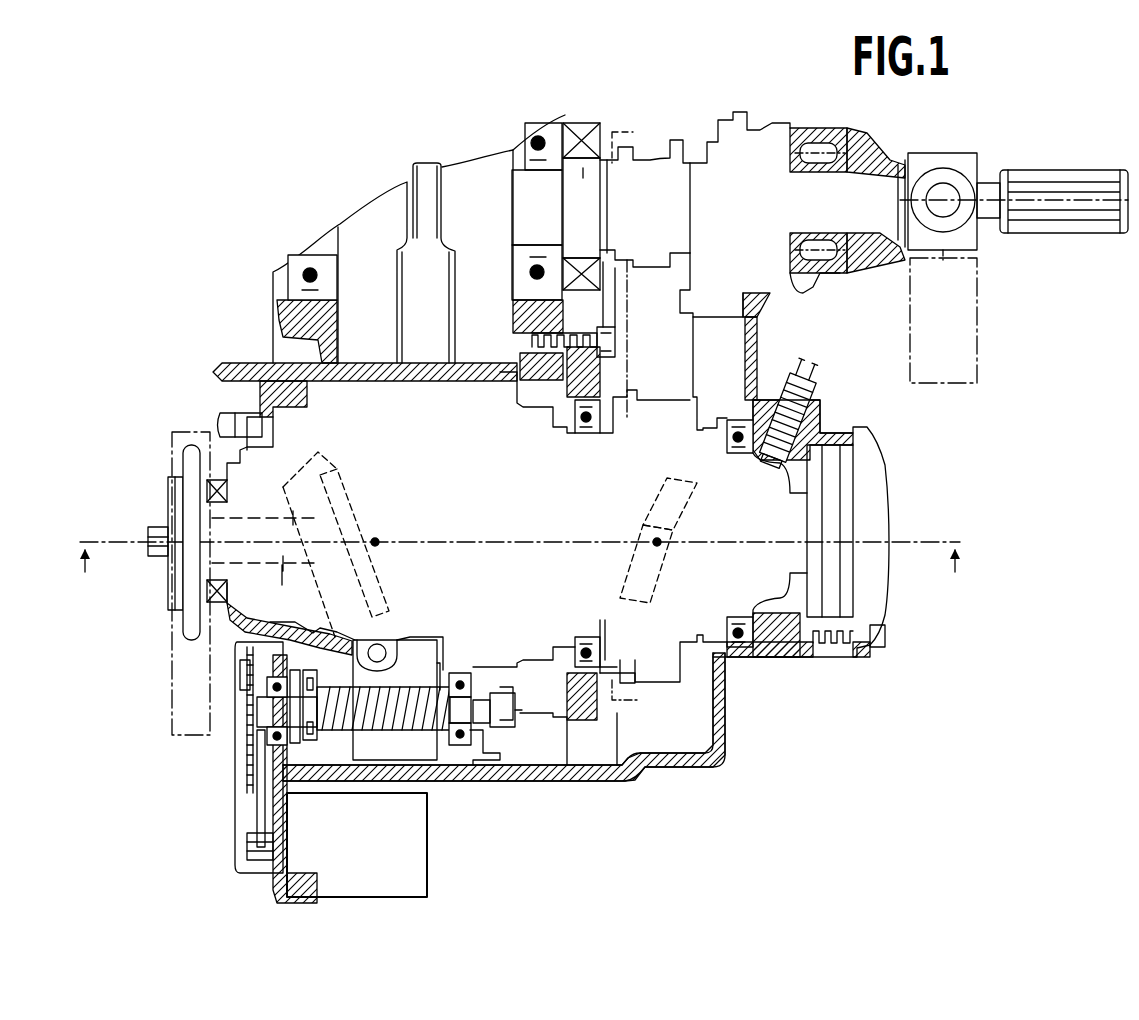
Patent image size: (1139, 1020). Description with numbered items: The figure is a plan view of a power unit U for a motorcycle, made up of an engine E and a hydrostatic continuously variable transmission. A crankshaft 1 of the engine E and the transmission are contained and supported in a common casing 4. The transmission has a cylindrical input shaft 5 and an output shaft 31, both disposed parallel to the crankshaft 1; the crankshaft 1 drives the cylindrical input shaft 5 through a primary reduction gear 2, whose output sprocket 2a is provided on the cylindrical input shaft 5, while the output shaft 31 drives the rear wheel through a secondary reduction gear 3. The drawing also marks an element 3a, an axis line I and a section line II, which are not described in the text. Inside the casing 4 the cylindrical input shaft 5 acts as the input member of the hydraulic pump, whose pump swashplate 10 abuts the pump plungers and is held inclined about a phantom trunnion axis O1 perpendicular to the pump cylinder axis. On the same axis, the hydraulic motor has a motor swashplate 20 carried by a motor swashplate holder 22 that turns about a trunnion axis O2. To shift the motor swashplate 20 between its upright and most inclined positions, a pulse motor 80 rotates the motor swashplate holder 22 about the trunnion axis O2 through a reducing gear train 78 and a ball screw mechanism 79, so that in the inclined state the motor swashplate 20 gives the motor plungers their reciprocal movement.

The crankshaft 1 is at (585, 175).
The primary reduction gear 2 is at (638, 132).
The output sprocket 2a is at (627, 382).
The secondary reduction gear 3 is at (160, 480).
The pulley rim 3a is at (189, 447).
The common casing 4 is at (668, 767).
The cylindrical input shaft 5 is at (664, 412).
The pump swashplate 10 is at (646, 586).
The motor swashplate 20 is at (380, 589).
The motor swashplate holder 22 is at (383, 637).
The output shaft 31 is at (266, 564).
The reducing gear train 78 is at (257, 815).
The ball screw mechanism 79 is at (419, 742).
The pulse motor 80 is at (357, 845).
The power unit U is at (302, 195).
The engine E is at (390, 177).
The axis I is at (537, 526).
The section line II is at (515, 584).
The phantom trunnion axis O1 is at (656, 540).
The trunnion axis O2 is at (375, 540).